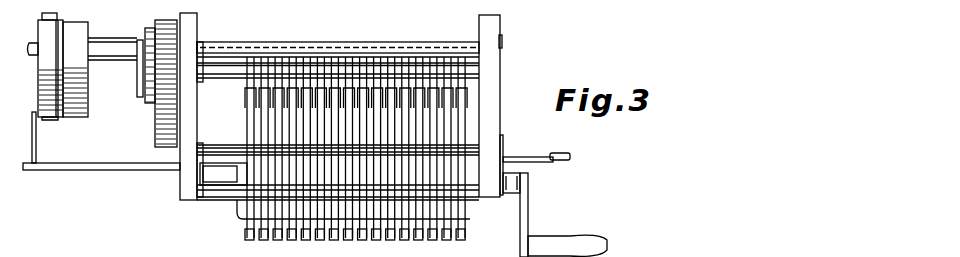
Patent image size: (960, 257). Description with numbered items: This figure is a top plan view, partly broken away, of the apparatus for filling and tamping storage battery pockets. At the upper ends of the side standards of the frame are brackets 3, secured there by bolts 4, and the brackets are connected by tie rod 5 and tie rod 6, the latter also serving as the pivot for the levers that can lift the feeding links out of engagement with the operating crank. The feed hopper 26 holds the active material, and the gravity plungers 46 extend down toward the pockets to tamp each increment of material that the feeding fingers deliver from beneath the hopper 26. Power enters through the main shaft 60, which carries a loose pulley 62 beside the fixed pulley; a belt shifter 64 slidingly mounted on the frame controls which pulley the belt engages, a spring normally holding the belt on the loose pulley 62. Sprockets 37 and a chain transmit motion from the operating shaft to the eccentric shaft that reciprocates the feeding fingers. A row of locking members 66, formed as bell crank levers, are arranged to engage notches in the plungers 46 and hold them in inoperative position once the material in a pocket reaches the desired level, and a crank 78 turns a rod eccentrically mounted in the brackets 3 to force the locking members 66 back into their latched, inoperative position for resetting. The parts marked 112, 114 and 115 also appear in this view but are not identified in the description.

The brackets 3 is at (350, 106).
The bolts 4 is at (338, 160).
The tie rod 5 is at (424, 42).
The tie rod 6 is at (214, 66).
The hopper 26 is at (329, 148).
The sprockets 37 is at (91, 69).
The plungers 46 is at (485, 92).
The main shaft 60 is at (69, 66).
The loose pulley 62 is at (114, 31).
The belt shifter 64 is at (127, 170).
The locking members 66 is at (470, 122).
The crank 78 is at (578, 238).
The gear wheel 112 is at (145, 83).
The bail 114 is at (342, 228).
The clips 115 is at (245, 120).